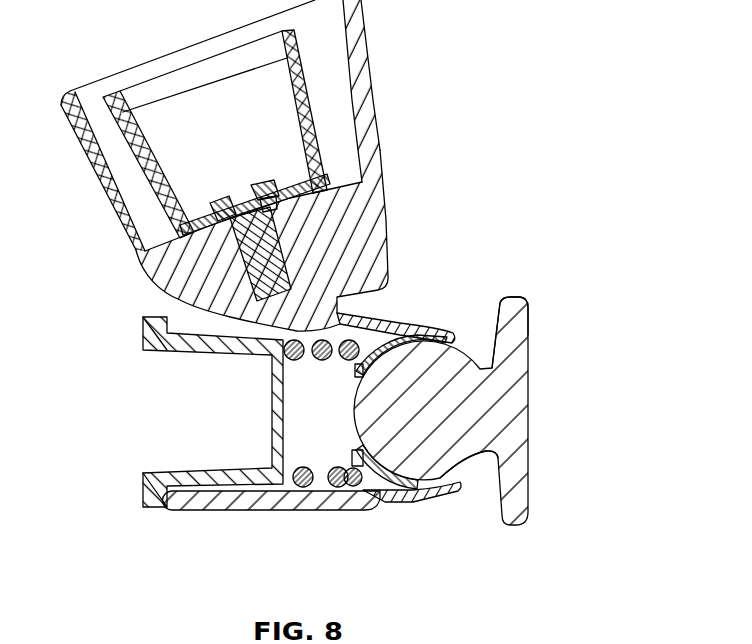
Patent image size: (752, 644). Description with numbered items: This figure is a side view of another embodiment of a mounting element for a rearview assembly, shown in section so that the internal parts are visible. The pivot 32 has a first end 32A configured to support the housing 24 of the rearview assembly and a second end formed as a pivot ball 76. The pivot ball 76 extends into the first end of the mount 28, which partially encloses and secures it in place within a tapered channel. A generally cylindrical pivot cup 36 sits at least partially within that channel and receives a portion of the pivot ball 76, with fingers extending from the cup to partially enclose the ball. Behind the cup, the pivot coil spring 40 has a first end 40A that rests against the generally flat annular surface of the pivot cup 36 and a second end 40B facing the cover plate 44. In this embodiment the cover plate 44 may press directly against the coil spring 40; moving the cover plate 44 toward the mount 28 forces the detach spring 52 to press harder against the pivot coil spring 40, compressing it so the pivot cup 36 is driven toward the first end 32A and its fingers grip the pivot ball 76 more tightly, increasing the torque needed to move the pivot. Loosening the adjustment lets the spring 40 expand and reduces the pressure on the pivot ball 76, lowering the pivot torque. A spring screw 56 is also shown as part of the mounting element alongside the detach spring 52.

The housing 24 is at (353, 240).
The mount 28 is at (377, 160).
The pivot 32 is at (436, 370).
The first end of pivot 32A is at (530, 327).
The pivot cup 36 is at (381, 337).
The pivot coil spring 40 is at (313, 481).
The first end of pivot coil spring 40A is at (380, 488).
The second end of pivot coil spring 40B is at (290, 493).
The cover plate 44 is at (160, 507).
The detach spring 52 is at (303, 85).
The spring screw 56 is at (263, 187).
The pivot ball 76 is at (433, 450).